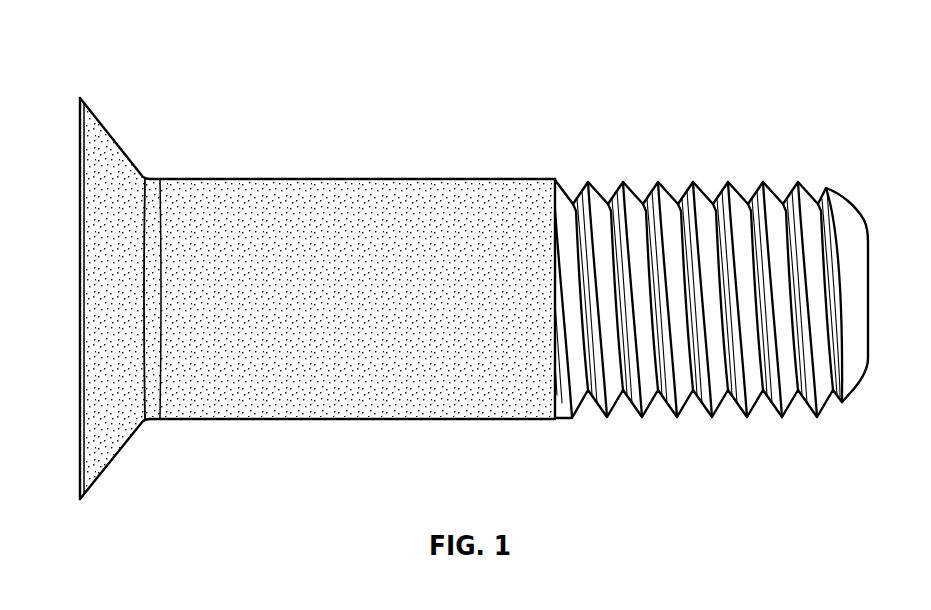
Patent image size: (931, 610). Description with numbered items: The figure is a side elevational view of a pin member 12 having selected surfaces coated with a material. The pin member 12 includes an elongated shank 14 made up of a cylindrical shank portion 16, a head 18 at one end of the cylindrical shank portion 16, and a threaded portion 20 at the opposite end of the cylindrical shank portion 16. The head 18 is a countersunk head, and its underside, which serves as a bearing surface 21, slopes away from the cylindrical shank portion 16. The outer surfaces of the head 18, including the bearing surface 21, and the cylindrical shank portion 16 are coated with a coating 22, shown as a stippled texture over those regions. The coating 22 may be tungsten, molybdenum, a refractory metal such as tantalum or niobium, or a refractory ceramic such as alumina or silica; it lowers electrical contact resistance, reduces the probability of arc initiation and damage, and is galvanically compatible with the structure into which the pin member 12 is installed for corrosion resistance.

The pin member 12 is at (128, 75).
The elongated shank 14 is at (412, 179).
The cylindrical shank portion 16 is at (300, 218).
The head 18 is at (95, 390).
The threaded portion 20 is at (672, 200).
The underside surface (bearing surface) of the head 21 is at (112, 132).
The coating 22 is at (342, 206).